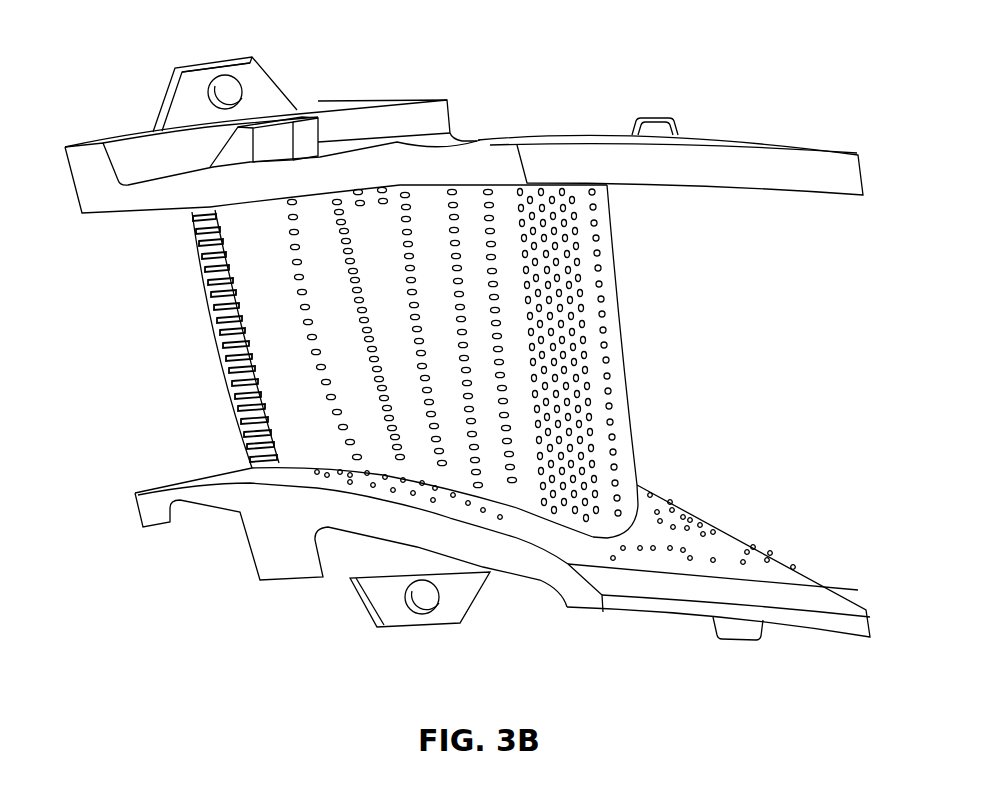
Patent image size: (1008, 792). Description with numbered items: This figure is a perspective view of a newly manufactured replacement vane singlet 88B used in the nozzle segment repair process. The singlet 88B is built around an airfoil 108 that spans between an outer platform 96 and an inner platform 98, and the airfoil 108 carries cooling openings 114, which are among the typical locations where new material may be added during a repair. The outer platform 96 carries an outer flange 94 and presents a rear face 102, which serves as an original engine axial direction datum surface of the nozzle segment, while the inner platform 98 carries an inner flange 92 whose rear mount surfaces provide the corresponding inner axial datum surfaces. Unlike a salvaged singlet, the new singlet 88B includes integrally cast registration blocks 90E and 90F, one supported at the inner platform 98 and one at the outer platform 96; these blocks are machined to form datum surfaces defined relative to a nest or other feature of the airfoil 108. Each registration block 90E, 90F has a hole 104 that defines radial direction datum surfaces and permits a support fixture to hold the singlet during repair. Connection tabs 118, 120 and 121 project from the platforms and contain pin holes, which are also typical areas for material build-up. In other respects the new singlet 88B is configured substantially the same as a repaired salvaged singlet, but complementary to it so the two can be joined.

The replacement vane singlet 88B is at (743, 340).
The registration block 90E is at (395, 617).
The registration block 90F is at (213, 65).
The inner flange 92 is at (285, 582).
The outer flange 94 is at (418, 117).
The outer platform 96 is at (797, 197).
The inner platform 98 is at (778, 557).
The rear face of the outer platform 102 is at (75, 195).
The hole 104 is at (243, 92).
The airfoil 108 is at (615, 295).
The cooling openings 114 is at (606, 330).
The connection tab 118 is at (737, 642).
The connection tab 120 is at (653, 117).
The connection tab 121 is at (277, 143).